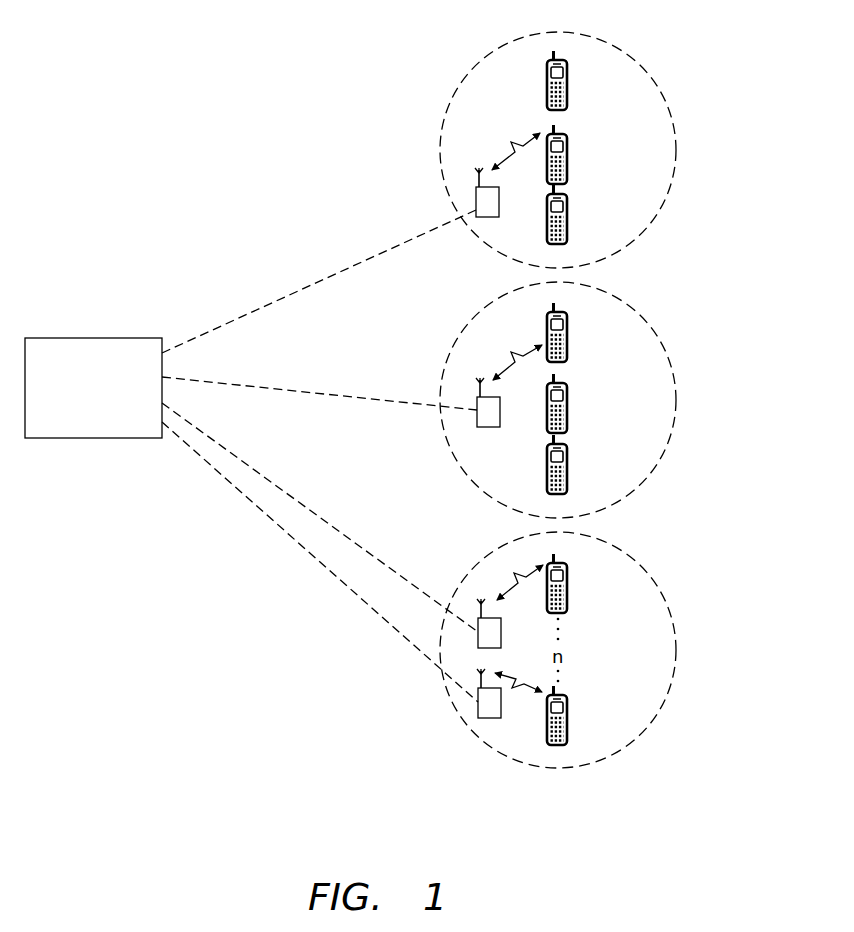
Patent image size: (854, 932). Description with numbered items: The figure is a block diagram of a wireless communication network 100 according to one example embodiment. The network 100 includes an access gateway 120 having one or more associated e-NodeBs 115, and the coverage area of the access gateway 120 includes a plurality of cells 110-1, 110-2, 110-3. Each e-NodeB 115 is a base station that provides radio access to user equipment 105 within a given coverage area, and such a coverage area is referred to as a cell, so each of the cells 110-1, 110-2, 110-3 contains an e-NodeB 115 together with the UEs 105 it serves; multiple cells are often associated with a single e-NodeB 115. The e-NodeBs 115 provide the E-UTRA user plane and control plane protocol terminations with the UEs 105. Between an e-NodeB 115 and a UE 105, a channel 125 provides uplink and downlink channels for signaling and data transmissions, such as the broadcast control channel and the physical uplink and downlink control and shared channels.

The wireless communication network 100 is at (68, 26).
The user equipment 105 is at (568, 80).
The cell 110-1 is at (677, 150).
The cell 110-2 is at (677, 400).
The cell 110-3 is at (677, 650).
The e-NodeB 115 is at (476, 188).
The access gateway 120 is at (97, 338).
The channel 125 is at (508, 160).